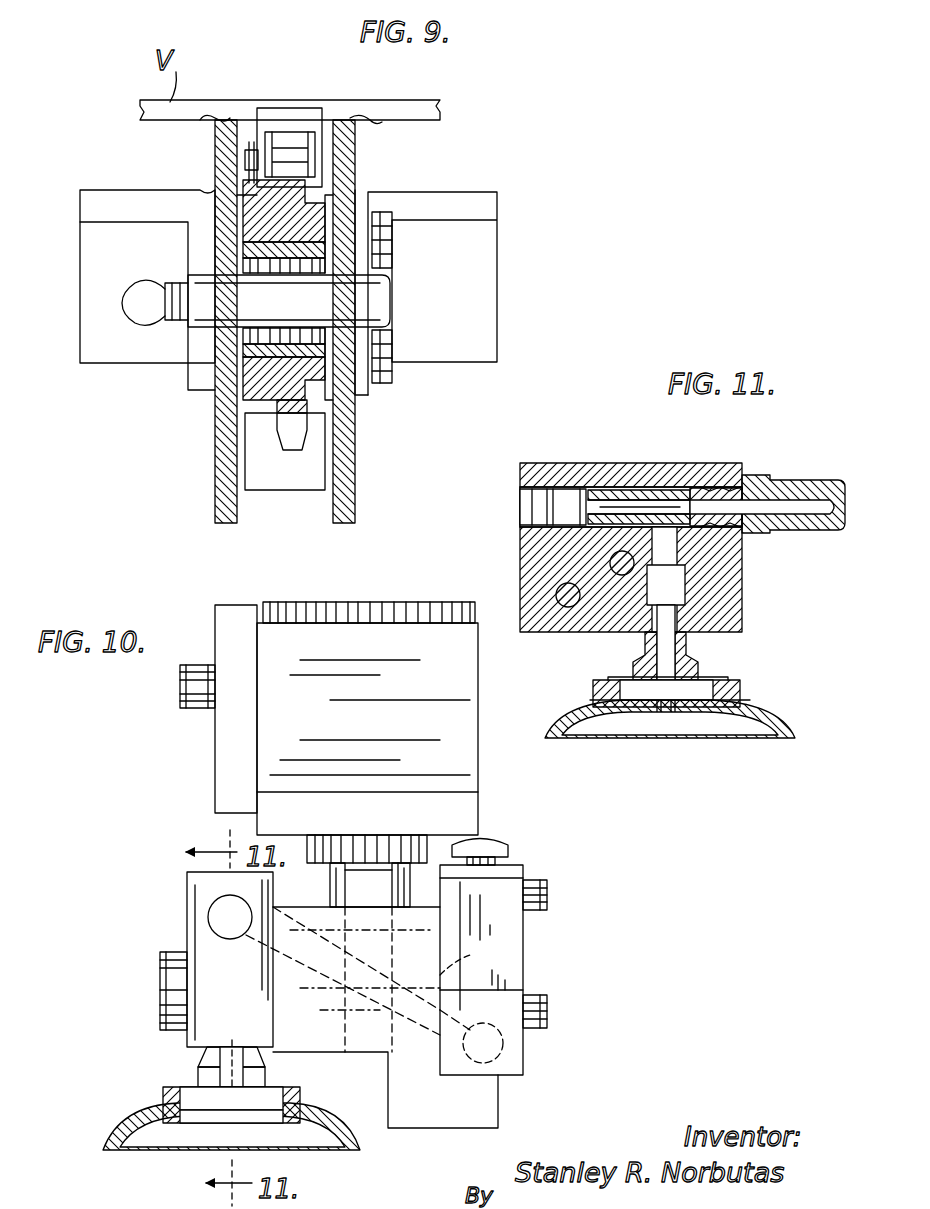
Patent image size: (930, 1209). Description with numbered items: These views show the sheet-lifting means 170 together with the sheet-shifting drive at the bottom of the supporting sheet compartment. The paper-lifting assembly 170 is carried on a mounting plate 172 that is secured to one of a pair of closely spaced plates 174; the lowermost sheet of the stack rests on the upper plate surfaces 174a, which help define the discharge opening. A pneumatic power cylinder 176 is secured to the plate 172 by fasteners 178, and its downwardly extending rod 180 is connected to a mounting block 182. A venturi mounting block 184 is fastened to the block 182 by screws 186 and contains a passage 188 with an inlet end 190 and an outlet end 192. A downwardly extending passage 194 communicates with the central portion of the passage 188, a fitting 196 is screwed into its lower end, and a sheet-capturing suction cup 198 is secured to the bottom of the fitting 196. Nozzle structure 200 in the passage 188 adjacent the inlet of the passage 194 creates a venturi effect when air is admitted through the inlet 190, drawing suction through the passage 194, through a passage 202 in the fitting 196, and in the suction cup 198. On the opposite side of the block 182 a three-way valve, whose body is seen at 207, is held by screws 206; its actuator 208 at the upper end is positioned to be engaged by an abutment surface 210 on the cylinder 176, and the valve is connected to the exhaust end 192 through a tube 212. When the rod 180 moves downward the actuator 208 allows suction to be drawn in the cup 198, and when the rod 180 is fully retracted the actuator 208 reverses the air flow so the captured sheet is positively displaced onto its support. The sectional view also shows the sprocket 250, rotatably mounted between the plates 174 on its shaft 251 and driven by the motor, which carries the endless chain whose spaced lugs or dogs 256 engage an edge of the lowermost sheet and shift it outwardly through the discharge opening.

In FIG. 10, the sheet-lifting means 170 is at (140, 1090).
In FIG. 10, the mounting plate 172 is at (215, 743).
In FIG. 9, the spaced plates 174 is at (216, 496).
In FIG. 9, the upper plate surfaces 174a is at (212, 120).
In FIG. 10, the pneumatic power cylinder 176 is at (470, 771).
In FIG. 10, the fasteners 178 is at (190, 689).
In FIG. 10, the rod 180 is at (322, 848).
In FIG. 10, the mounting block 182 is at (398, 1078).
In FIG. 11, the venturi mounting block 184 is at (575, 463).
In FIG. 10, the venturi mounting block 184 is at (192, 888).
In FIG. 10, the screws 186 is at (172, 1003).
In FIG. 11, the passage 188 is at (637, 486).
In FIG. 11, the inlet end 190 is at (530, 519).
In FIG. 10, the inlet end 190 is at (222, 916).
In FIG. 11, the outlet end 192 is at (712, 486).
In FIG. 11, the downwardly extending passage 194 is at (684, 586).
In FIG. 11, the fitting 196 is at (692, 670).
In FIG. 10, the fitting 196 is at (200, 1076).
In FIG. 11, the suction cup 198 is at (742, 704).
In FIG. 10, the suction cup 198 is at (122, 1134).
In FIG. 11, the nozzle structure 200 is at (607, 478).
In FIG. 11, the passage 202 is at (655, 662).
In FIG. 10, the screws 206 is at (547, 898).
In FIG. 10, the housing block 207 is at (525, 945).
In FIG. 10, the actuator 208 is at (496, 848).
In FIG. 10, the abutment surface 210 is at (426, 840).
In FIG. 10, the tube 212 is at (443, 962).
In FIG. 9, the sprocket 250 is at (285, 433).
In FIG. 9, the shaft 251 is at (372, 297).
In FIG. 9, the lugs or dogs 256 is at (290, 113).